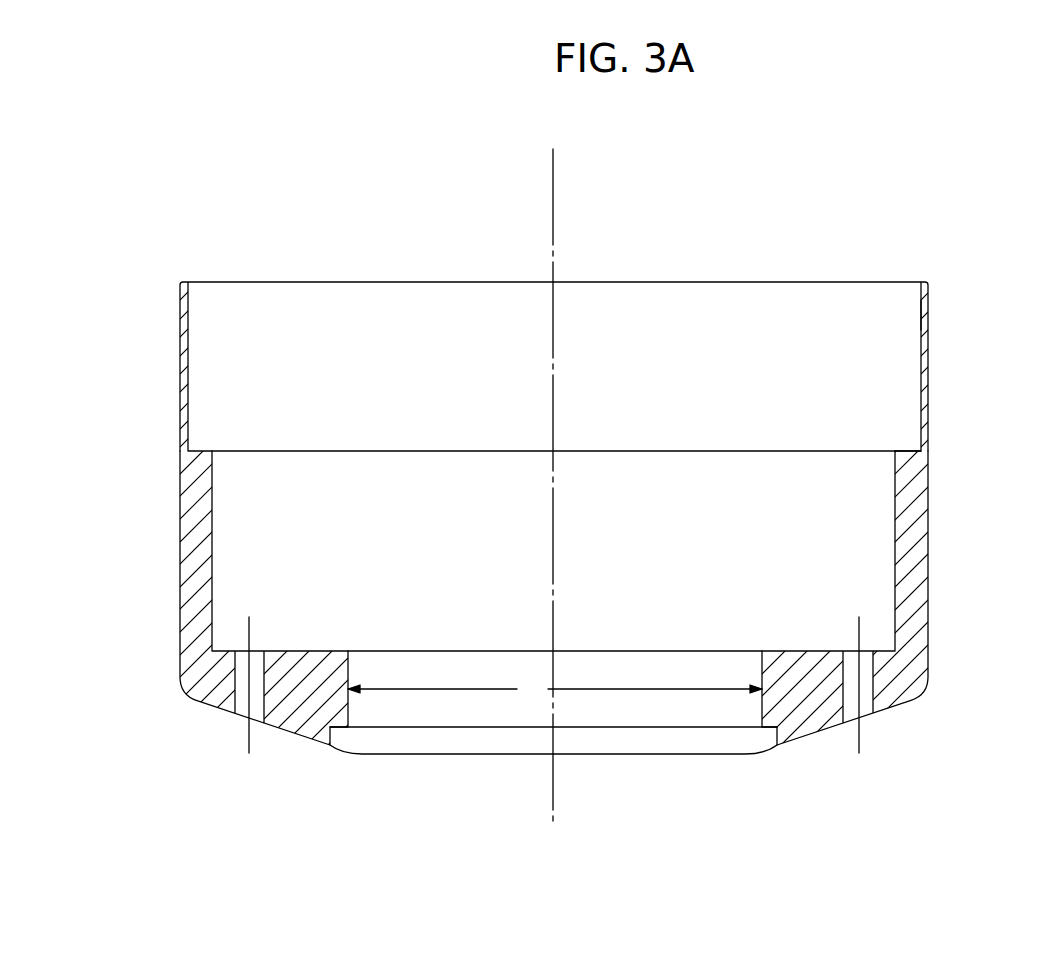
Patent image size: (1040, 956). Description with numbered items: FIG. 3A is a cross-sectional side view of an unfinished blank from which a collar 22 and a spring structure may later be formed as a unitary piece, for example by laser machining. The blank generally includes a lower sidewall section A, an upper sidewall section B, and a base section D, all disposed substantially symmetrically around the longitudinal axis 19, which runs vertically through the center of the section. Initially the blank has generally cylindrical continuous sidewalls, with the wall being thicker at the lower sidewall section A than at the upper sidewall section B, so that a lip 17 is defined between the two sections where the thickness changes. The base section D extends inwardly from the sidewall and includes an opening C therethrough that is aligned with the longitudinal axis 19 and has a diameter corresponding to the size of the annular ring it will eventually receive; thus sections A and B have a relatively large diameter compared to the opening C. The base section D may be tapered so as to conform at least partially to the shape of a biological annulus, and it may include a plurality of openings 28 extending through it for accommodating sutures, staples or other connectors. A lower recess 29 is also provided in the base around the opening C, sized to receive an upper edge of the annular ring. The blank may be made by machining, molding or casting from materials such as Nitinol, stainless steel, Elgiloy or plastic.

The longitudinal axis 19 is at (553, 228).
The collar 22 is at (178, 322).
The lip 17 is at (907, 450).
The openings 28 is at (995, 720).
The lower recess 29 is at (338, 738).
The lower sidewall section A is at (925, 533).
The upper sidewall section B is at (928, 350).
The opening C is at (555, 689).
The base section D is at (820, 718).